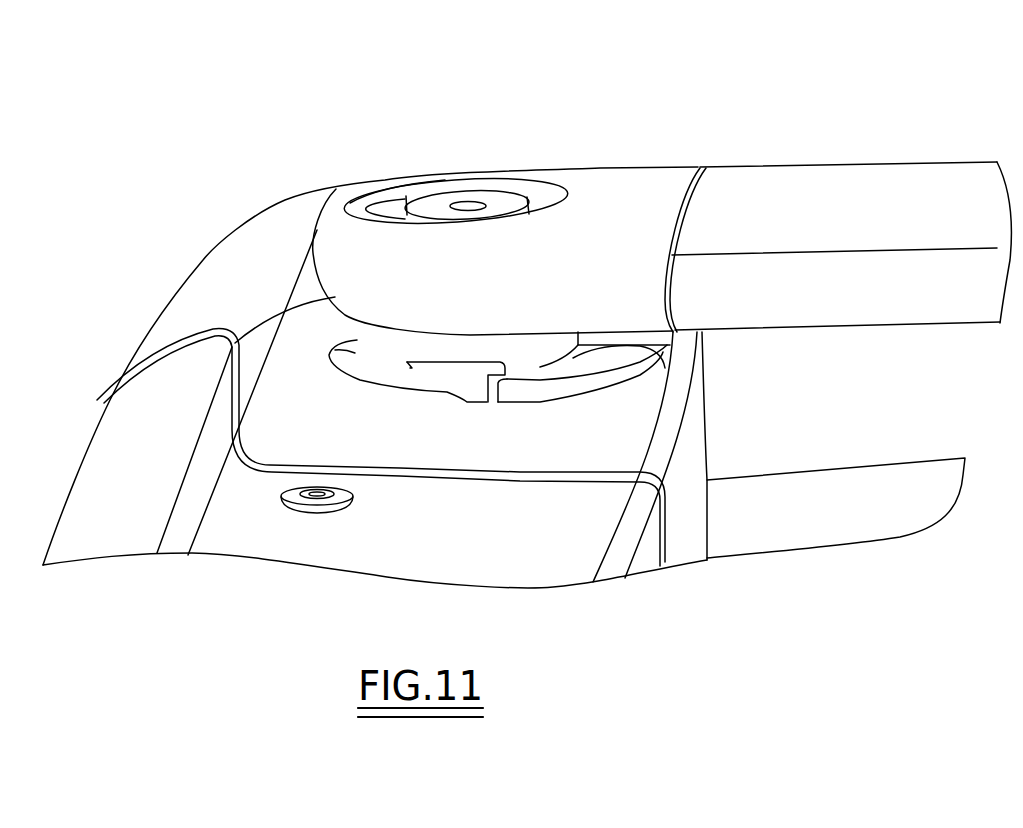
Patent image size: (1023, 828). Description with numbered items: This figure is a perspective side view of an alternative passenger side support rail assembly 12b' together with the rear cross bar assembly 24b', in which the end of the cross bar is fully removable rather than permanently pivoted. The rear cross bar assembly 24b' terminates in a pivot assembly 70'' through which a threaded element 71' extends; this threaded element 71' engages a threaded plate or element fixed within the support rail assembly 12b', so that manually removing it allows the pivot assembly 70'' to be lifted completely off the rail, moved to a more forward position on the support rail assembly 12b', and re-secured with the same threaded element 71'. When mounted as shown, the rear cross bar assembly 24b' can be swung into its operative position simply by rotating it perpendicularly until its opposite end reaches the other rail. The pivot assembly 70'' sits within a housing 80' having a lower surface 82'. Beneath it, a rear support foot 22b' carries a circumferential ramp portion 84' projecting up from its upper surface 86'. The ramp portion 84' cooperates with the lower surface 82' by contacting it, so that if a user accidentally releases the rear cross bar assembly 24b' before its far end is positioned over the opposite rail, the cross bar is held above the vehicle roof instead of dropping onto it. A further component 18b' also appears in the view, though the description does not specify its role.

The pivot assembly 70'' is at (403, 148).
The threaded element 71' is at (468, 153).
The rear cross bar assembly 24b' is at (838, 203).
The side panel 18b' is at (381, 378).
The housing 80' is at (448, 267).
The support rail assembly 12b' is at (369, 377).
The rear support foot 22b' is at (779, 457).
The circumferential ramp portion 84' is at (557, 403).
The lower surface 82' is at (469, 405).
The upper surface 86' is at (392, 499).